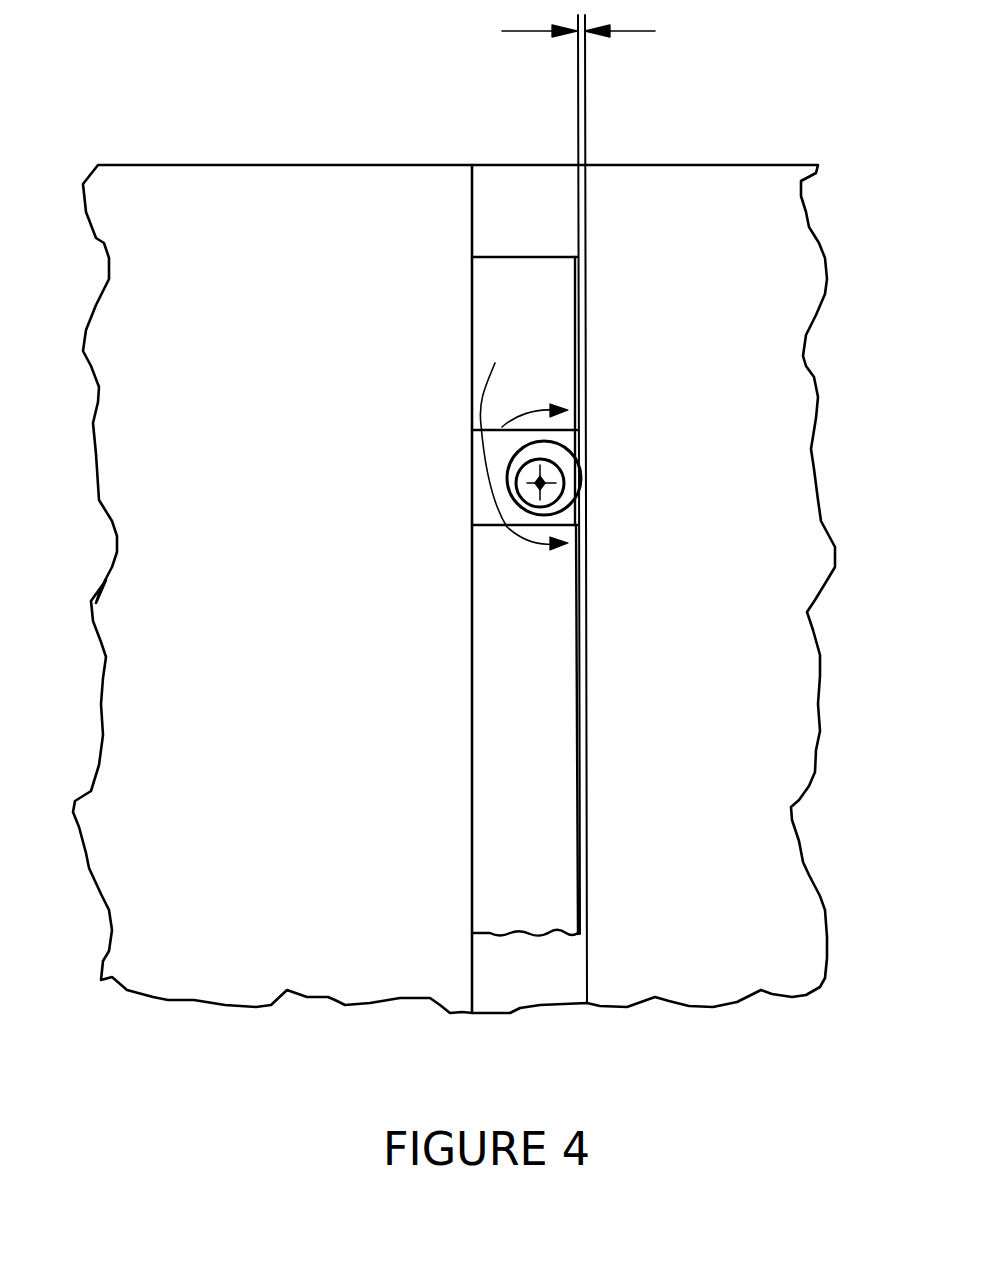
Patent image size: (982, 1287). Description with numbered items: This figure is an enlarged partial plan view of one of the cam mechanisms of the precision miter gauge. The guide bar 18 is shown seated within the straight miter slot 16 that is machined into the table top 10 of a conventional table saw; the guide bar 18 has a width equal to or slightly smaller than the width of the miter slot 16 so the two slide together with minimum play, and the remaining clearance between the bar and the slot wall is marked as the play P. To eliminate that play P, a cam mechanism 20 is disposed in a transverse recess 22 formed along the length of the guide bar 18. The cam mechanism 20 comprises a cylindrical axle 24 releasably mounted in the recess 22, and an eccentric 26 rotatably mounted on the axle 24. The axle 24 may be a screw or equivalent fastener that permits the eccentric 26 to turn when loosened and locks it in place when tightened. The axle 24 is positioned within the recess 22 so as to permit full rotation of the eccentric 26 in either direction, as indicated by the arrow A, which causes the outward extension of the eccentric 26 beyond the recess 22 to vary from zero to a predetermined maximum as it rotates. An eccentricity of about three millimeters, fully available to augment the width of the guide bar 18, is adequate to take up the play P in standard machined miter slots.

The table top 10 is at (454, 589).
The miter slot 16 is at (530, 205).
The guide bar 18 is at (520, 287).
The cam mechanism 20 is at (495, 495).
The transverse recess 22 is at (480, 490).
The cylindrical axle 24 is at (550, 487).
The eccentric 26 is at (570, 467).
The arrow A is at (524, 437).
The play P is at (635, 31).